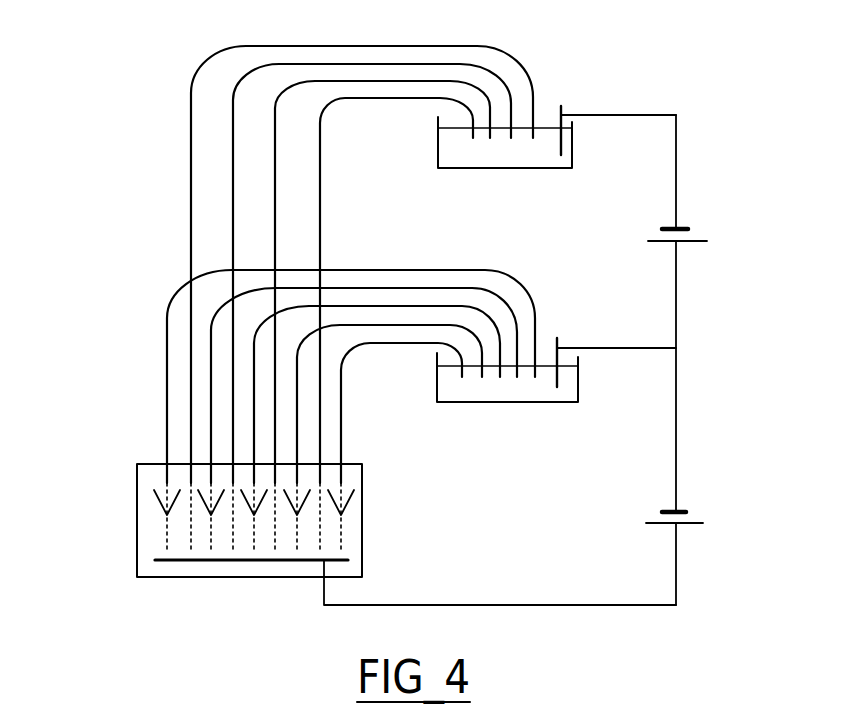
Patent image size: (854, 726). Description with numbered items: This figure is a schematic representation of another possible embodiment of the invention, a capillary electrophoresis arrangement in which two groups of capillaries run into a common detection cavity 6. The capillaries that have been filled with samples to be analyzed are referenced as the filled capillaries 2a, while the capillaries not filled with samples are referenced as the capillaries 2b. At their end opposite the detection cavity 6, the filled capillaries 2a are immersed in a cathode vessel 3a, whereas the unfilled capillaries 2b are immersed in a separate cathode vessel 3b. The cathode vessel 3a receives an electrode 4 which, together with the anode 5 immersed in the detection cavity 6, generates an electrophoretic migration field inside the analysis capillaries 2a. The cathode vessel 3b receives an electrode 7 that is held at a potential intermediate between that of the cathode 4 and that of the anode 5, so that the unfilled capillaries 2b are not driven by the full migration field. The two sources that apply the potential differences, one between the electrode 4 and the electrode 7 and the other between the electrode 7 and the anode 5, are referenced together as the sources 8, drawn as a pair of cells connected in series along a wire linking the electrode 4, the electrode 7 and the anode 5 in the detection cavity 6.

The filled capillaries 2a is at (366, 253).
The capillaries not filled with samples 2b is at (351, 358).
The cathode vessel 3a is at (509, 163).
The cathode vessel 3b is at (510, 399).
The electrode 4 is at (618, 114).
The electrode 7 is at (616, 345).
The anode 5 is at (180, 562).
The detection cavity 6 is at (137, 486).
The sources 8 is at (687, 493).